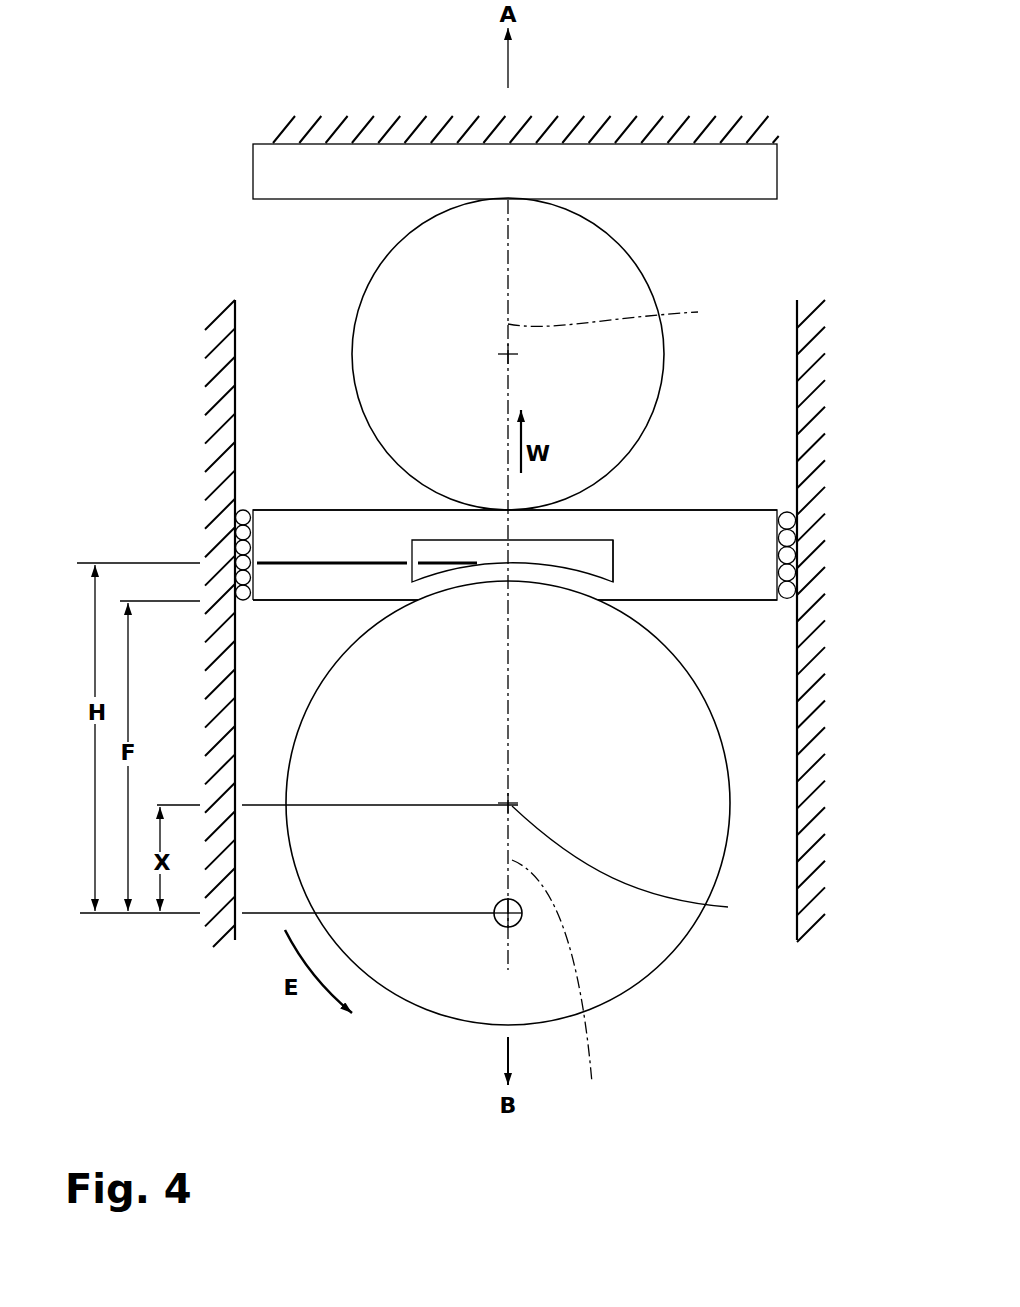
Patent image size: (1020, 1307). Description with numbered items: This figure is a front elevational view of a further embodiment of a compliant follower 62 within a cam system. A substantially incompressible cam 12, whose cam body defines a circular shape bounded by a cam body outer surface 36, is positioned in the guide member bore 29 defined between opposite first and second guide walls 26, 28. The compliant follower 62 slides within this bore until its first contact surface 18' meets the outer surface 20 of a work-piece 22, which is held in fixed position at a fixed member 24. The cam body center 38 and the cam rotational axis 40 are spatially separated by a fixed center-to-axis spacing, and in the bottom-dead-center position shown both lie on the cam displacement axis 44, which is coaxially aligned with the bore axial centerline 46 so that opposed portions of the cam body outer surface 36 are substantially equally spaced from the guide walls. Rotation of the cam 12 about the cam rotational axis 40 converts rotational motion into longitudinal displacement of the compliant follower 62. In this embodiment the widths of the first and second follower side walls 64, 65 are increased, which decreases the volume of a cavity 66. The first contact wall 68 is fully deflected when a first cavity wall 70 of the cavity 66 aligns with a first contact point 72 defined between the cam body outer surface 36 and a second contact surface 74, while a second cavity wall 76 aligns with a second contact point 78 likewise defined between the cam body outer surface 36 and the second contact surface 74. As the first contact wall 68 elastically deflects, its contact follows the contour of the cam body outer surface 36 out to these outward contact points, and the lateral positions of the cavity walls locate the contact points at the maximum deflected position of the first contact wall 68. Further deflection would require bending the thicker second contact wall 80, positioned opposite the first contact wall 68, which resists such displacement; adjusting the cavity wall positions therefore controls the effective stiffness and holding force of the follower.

The cam 12 is at (662, 939).
The first contact surface 18' is at (515, 471).
The outer surface 20 is at (361, 415).
The work-piece 22 is at (646, 276).
The fixed member 24 is at (318, 178).
The first guide wall 26 is at (240, 374).
The second guide wall 28 is at (795, 335).
The guide member bore 29 is at (790, 418).
The cam body outer surface 36 is at (707, 694).
The cam body center 38 is at (637, 865).
The cam rotational axis 40 is at (503, 926).
The cam displacement axis 44 is at (561, 986).
The bore axial centerline 46 is at (620, 314).
The compliant follower 62 is at (515, 555).
The first follower side wall 64 is at (335, 631).
The second follower side wall 65 is at (717, 592).
The cavity 66 is at (410, 570).
The first contact wall 68 is at (490, 577).
The first cavity wall 70 is at (410, 547).
The first contact point 72 is at (423, 603).
The second contact surface 74 is at (318, 604).
The second cavity wall 76 is at (617, 562).
The second contact point 78 is at (596, 603).
The second contact wall 80 is at (423, 520).